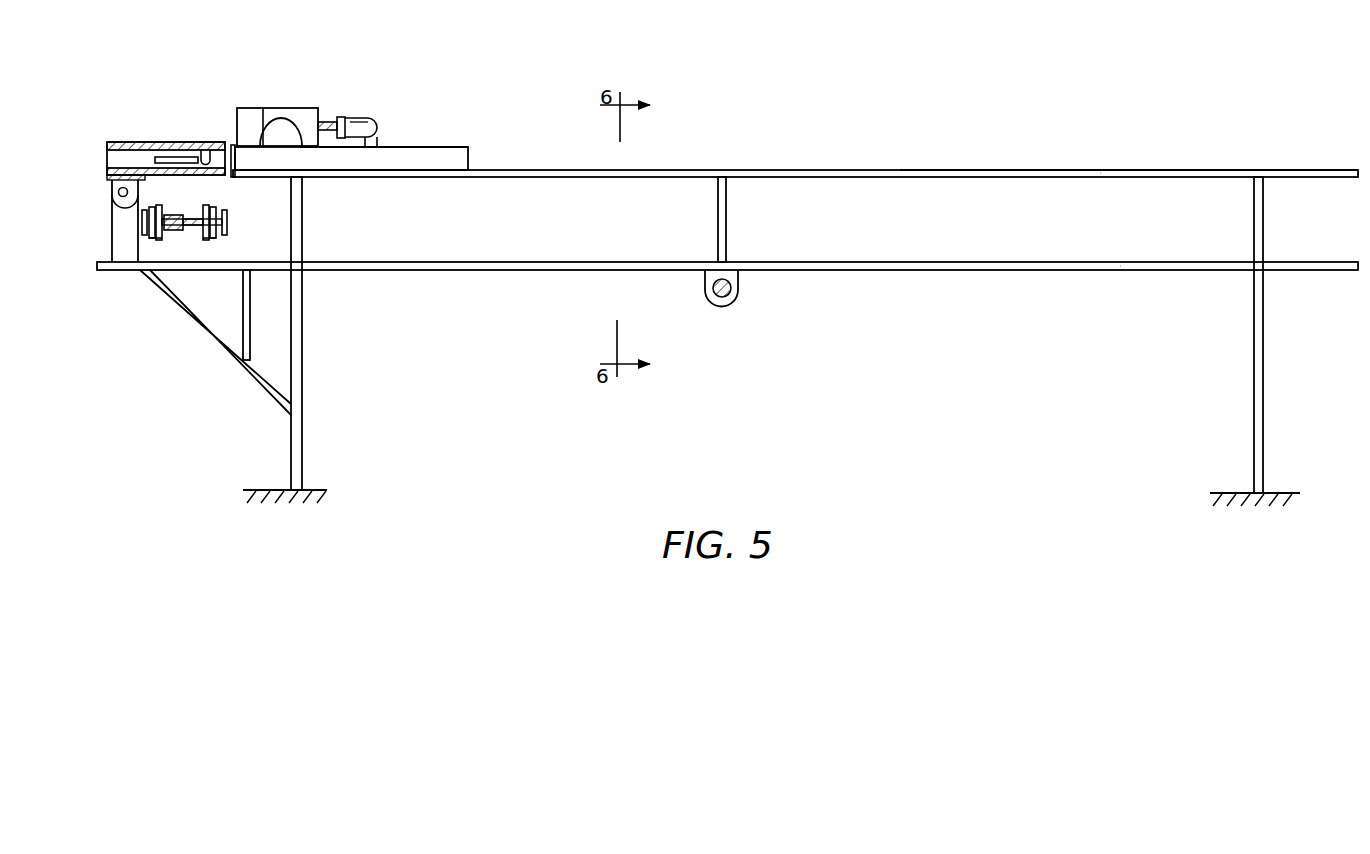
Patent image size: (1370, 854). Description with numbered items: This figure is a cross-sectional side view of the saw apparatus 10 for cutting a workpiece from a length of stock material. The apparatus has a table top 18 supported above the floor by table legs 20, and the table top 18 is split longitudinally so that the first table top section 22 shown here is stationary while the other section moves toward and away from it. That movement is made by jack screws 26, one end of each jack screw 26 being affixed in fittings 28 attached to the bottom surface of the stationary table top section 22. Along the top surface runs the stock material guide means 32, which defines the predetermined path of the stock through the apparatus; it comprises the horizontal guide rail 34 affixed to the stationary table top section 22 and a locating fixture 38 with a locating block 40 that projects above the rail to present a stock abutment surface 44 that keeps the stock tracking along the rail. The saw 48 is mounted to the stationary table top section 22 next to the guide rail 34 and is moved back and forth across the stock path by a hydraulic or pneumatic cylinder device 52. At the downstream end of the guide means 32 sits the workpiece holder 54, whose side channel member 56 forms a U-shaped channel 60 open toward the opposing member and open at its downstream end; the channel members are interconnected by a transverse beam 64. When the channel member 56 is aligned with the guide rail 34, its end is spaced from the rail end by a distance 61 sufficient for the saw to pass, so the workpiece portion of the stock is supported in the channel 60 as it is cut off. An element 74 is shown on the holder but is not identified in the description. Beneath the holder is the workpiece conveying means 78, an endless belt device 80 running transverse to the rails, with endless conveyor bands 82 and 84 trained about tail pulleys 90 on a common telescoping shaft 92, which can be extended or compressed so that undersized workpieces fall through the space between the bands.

The saw apparatus 10 is at (938, 98).
The table top 18 is at (1128, 250).
The table legs 20 is at (1263, 383).
The first table top section 22 is at (1007, 262).
The jack screws 26 is at (732, 300).
The fittings 28 is at (706, 304).
The stock material guide means 32 is at (852, 157).
The guide rail 34 is at (1010, 170).
The locating fixture 38 is at (471, 114).
The locating block 40 is at (437, 155).
The stock abutment surface 44 is at (413, 158).
The saw 48 is at (268, 107).
The cylinder device 52 is at (352, 120).
The workpiece holder 54 is at (143, 131).
The side channel member 56 is at (118, 147).
The U-shaped channel 60 is at (228, 142).
The distance 61 is at (233, 146).
The transverse beam 64 is at (107, 178).
The slot 74 is at (183, 156).
The workpiece conveying means 78 is at (166, 238).
The endless belt device 80 is at (196, 236).
The endless conveyor band 82 is at (217, 200).
The endless conveyor band 84 is at (160, 191).
The tail pulleys 90 is at (147, 231).
The tail pulley shaft 92 is at (197, 212).